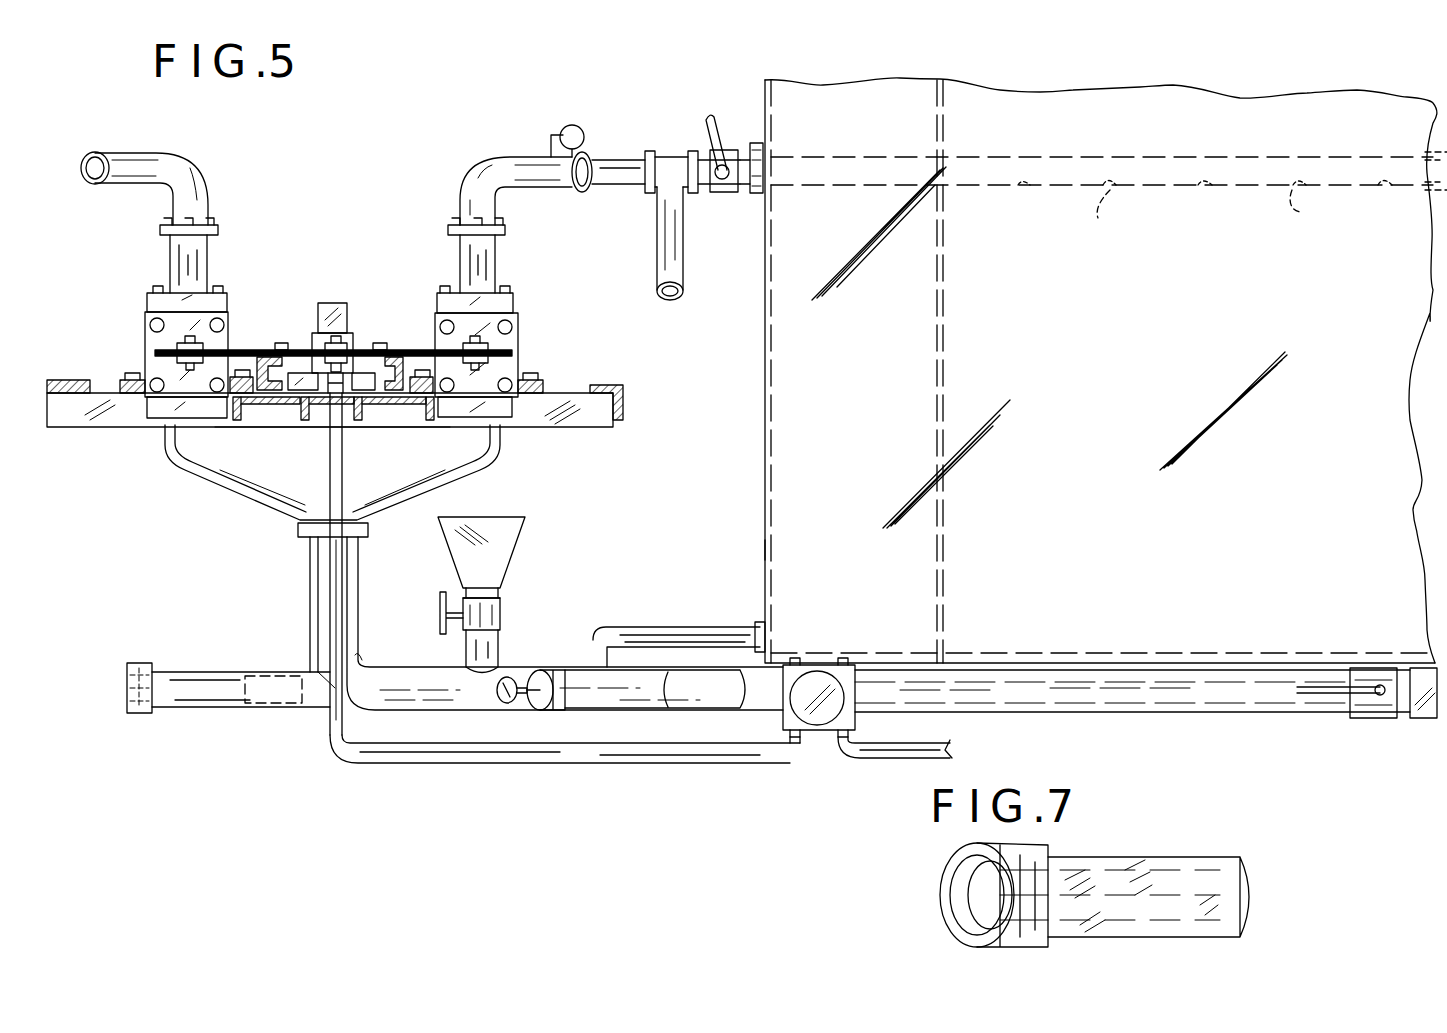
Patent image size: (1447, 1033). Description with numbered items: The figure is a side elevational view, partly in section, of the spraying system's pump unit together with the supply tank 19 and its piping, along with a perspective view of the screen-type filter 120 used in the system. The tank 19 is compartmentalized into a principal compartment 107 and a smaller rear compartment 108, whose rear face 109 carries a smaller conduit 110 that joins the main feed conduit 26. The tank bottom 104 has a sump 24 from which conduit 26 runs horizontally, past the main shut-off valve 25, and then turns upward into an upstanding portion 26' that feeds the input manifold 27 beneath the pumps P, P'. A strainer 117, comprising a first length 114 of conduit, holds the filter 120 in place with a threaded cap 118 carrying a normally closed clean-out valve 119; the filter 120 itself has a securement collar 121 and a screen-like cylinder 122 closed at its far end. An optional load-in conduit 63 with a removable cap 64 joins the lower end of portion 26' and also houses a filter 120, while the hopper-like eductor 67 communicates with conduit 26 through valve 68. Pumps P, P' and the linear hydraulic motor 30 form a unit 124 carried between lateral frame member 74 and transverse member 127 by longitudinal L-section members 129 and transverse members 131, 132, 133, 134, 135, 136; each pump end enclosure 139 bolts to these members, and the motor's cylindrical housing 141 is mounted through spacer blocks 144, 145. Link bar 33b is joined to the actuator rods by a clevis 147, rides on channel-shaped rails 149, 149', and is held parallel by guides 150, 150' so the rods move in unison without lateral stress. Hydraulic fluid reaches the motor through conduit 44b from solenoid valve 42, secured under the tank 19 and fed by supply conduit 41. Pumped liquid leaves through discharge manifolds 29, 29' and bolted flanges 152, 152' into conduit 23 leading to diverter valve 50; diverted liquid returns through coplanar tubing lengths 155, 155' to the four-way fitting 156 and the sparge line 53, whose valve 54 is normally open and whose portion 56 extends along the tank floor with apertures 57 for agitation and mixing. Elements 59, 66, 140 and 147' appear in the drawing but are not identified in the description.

In FIG. 5, the supply tank 19 is at (1433, 95).
In FIG. 5, the smaller compartment 108 is at (855, 120).
In FIG. 5, the principal compartment 107 is at (985, 130).
In FIG. 5, the rear face 109 is at (765, 556).
In FIG. 5, the smaller diameter conduit 110 is at (755, 631).
In FIG. 5, the sparge line portion 56 is at (1068, 157).
In FIG. 5, the apertures 57 is at (1385, 190).
In FIG. 5, the fluid conduit 23 is at (530, 140).
In FIG. 5, the pressure gauge 59 is at (560, 128).
In FIG. 5, the diverter valve 50 is at (586, 156).
In FIG. 5, the horizontal tubing length 155 is at (615, 197).
In FIG. 5, the horizontal tubing length 155' is at (709, 249).
In FIG. 5, the four-way fitting 156 is at (690, 132).
In FIG. 5, the sparge line 53 is at (709, 118).
In FIG. 5, the valve 54 is at (722, 192).
In FIG. 5, the bolted flange 152 is at (511, 215).
In FIG. 5, the bolted flange 152' is at (228, 205).
In FIG. 5, the discharge manifold 29 is at (512, 263).
In FIG. 5, the discharge manifold 29' is at (144, 222).
In FIG. 5, the linear hydraulic pump P is at (498, 341).
In FIG. 5, the linear hydraulic pump P' is at (159, 351).
In FIG. 5, the end enclosure 139 is at (145, 337).
In FIG. 5, the clevis and pin securement 147 is at (288, 307).
In FIG. 5, the clamp 147' is at (371, 323).
In FIG. 5, the lateral frame member 74 is at (57, 364).
In FIG. 5, the transverse member 131 is at (130, 427).
In FIG. 5, the longitudinal support member 129 is at (600, 427).
In FIG. 5, the transverse member 127 is at (605, 390).
In FIG. 5, the transverse member 136 is at (530, 428).
In FIG. 5, the link bar 33b is at (240, 377).
In FIG. 5, the linear hydraulic motor 30 is at (338, 303).
In FIG. 5, the motor housing 141 is at (316, 335).
In FIG. 5, the channel-shaped rail 149 is at (413, 335).
In FIG. 5, the channel-shaped rail 149' is at (269, 346).
In FIG. 5, the spacer block 144 is at (281, 352).
In FIG. 5, the spacer block 145 is at (360, 363).
In FIG. 5, the pump and motor unit 124 is at (520, 345).
In FIG. 5, the transverse member 132 is at (240, 422).
In FIG. 5, the transverse member 133 is at (278, 392).
In FIG. 5, the transverse member 134 is at (357, 402).
In FIG. 5, the transverse member 135 is at (380, 402).
In FIG. 5, the guide 150 is at (405, 452).
In FIG. 5, the guide 150' is at (279, 448).
In FIG. 5, the input manifold 27 is at (450, 490).
In FIG. 5, the flange 140 is at (298, 531).
In FIG. 5, the upstanding portion 26' is at (546, 623).
In FIG. 5, the conduit extension 63 is at (205, 672).
In FIG. 5, the filter 120 is at (248, 676).
In FIG. 7, the filter 120 is at (1103, 937).
In FIG. 5, the cap 64 is at (140, 663).
In FIG. 5, the eductor 67 is at (512, 568).
In FIG. 5, the valve 68 is at (500, 619).
In FIG. 5, the funnel outlet pipe 66 is at (465, 656).
In FIG. 5, the valve 119 is at (500, 701).
In FIG. 5, the cap 118 is at (545, 709).
In FIG. 5, the first conduit length 114 is at (760, 712).
In FIG. 5, the strainer 117 is at (605, 712).
In FIG. 5, the hydraulic conduit 44b is at (655, 763).
In FIG. 5, the solenoid valve 42 is at (817, 740).
In FIG. 5, the fluid supply conduit 41 is at (875, 758).
In FIG. 5, the fluid conduit 26 is at (1132, 715).
In FIG. 5, the tank bottom 104 is at (1220, 668).
In FIG. 5, the valve 25 is at (1360, 718).
In FIG. 5, the sump 24 is at (1425, 718).
In FIG. 7, the screen-like cylinder 122 is at (1185, 857).
In FIG. 7, the securement collar 121 is at (1000, 947).